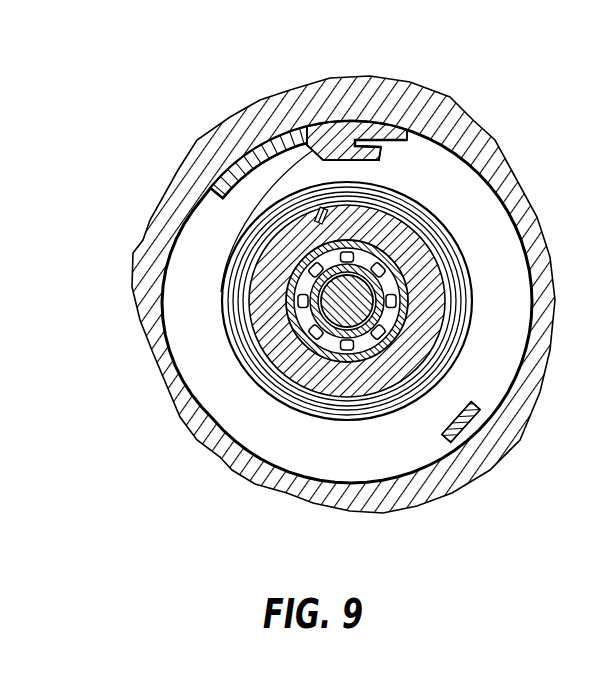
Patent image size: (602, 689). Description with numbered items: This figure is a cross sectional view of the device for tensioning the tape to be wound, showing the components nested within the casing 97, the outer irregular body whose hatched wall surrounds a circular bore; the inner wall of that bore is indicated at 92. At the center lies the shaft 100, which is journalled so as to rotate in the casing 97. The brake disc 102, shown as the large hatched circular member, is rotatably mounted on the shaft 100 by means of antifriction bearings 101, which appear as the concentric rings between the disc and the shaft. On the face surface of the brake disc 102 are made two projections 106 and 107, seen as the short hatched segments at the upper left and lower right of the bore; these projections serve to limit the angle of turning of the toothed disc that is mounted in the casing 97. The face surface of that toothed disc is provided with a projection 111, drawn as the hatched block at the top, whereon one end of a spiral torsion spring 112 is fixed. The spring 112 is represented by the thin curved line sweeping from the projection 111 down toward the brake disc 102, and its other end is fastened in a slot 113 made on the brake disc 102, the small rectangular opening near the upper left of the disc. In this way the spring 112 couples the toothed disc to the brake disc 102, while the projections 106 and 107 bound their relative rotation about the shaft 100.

The casing 97 is at (152, 263).
The housing bore wall 92 is at (262, 146).
The projection 106 is at (226, 172).
The projection 111 is at (333, 143).
The spiral torsion spring 112 is at (237, 223).
The brake disc 102 is at (407, 227).
The antifriction bearings 101 is at (315, 332).
The shaft 100 is at (398, 283).
The slot 113 is at (310, 228).
The projection 107 is at (484, 420).